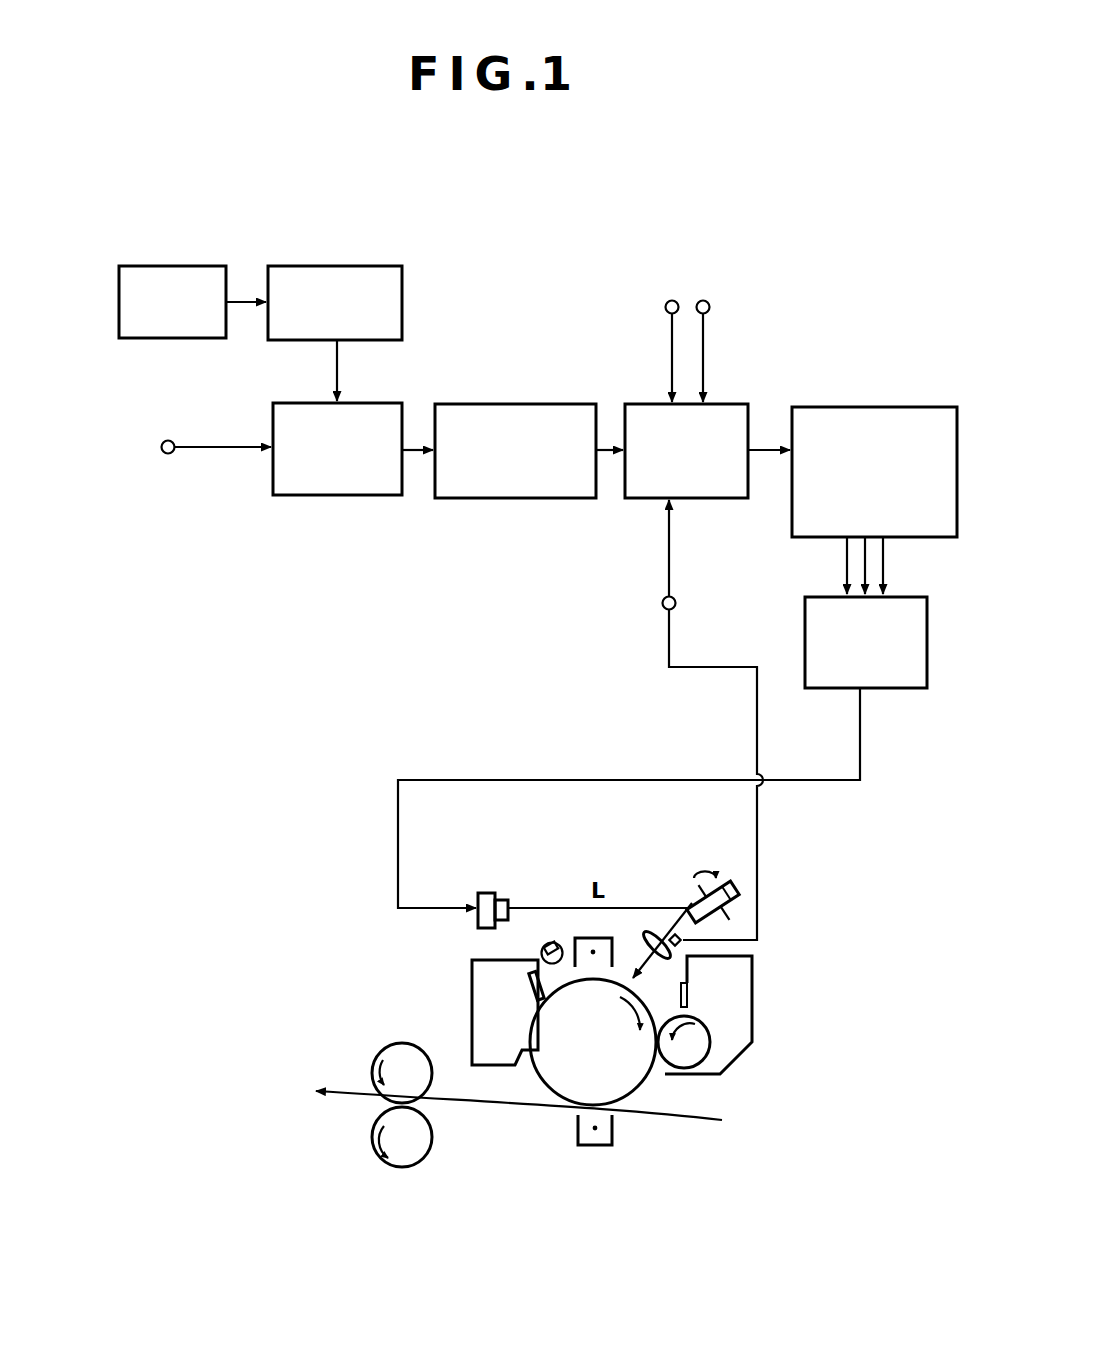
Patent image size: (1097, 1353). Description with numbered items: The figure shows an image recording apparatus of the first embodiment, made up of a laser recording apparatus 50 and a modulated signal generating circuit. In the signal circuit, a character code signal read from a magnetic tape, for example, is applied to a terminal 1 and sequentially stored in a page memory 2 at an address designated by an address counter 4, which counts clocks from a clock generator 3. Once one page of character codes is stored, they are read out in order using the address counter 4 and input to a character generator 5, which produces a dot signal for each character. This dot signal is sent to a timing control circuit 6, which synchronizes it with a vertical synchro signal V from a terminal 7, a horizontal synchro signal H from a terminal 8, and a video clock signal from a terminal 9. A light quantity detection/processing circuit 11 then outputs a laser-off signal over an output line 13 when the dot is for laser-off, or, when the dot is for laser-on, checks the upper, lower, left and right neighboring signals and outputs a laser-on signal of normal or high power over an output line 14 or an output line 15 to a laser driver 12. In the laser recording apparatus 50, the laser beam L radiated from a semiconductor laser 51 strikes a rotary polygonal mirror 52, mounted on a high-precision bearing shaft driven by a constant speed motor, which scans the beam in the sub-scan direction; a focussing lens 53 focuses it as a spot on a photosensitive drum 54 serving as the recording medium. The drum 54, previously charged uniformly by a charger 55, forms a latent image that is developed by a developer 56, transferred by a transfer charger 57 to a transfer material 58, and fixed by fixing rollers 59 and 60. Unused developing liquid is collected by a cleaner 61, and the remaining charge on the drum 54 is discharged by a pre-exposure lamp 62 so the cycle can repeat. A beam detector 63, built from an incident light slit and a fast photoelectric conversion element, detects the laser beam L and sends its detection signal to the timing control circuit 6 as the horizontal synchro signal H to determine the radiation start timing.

The terminal 1 is at (174, 442).
The page memory 2 is at (370, 496).
The clock generator 3 is at (218, 265).
The address counter 4 is at (382, 268).
The character generator 5 is at (556, 406).
The timing control circuit 6 is at (738, 406).
The terminal 7 is at (665, 309).
The terminal 8 is at (676, 606).
The terminal 9 is at (710, 310).
The light quantity detection/processing circuit 11 is at (887, 412).
The laser driver 12 is at (888, 689).
The output line 13 is at (845, 563).
The output line 14 is at (865, 550).
The output line 15 is at (883, 573).
The laser recording apparatus 50 is at (828, 912).
The semiconductor laser 51 is at (484, 893).
The rotary polygonal mirror 52 is at (696, 900).
The focussing lens 53 is at (652, 930).
The photosensitive drum 54 is at (648, 1082).
The charger 55 is at (588, 937).
The developer 56 is at (753, 1030).
The transfer charger 57 is at (592, 1146).
The transfer material 58 is at (507, 1110).
The fixing roller 59 is at (390, 1050).
The fixing roller 60 is at (424, 1158).
The cleaner 61 is at (472, 988).
The pre-exposure lamp 62 is at (540, 953).
The beam detector 63 is at (675, 948).